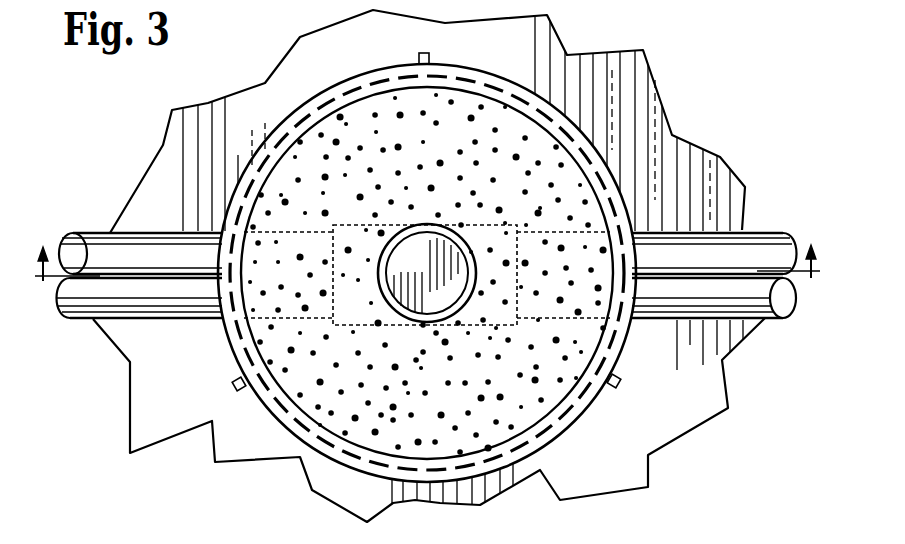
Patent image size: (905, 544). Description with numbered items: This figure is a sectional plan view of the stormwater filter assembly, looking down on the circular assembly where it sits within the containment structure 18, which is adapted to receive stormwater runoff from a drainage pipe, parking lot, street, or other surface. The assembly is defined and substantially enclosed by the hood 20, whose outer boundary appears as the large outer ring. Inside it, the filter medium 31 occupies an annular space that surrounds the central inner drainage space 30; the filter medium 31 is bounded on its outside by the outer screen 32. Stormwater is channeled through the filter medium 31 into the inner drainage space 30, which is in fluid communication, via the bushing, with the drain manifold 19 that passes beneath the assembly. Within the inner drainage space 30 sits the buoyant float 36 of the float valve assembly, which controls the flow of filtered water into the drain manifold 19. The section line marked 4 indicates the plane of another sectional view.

The section line 4- 4 is at (426, 248).
The support plate 18 is at (169, 411).
The shaft 19 is at (133, 320).
The disk outer rim 20 is at (541, 449).
The hub 30 is at (394, 304).
The intermediate groove ring 31 is at (607, 349).
The inner ring of abrasive surface 32 is at (568, 413).
The shaft end 36 is at (428, 269).